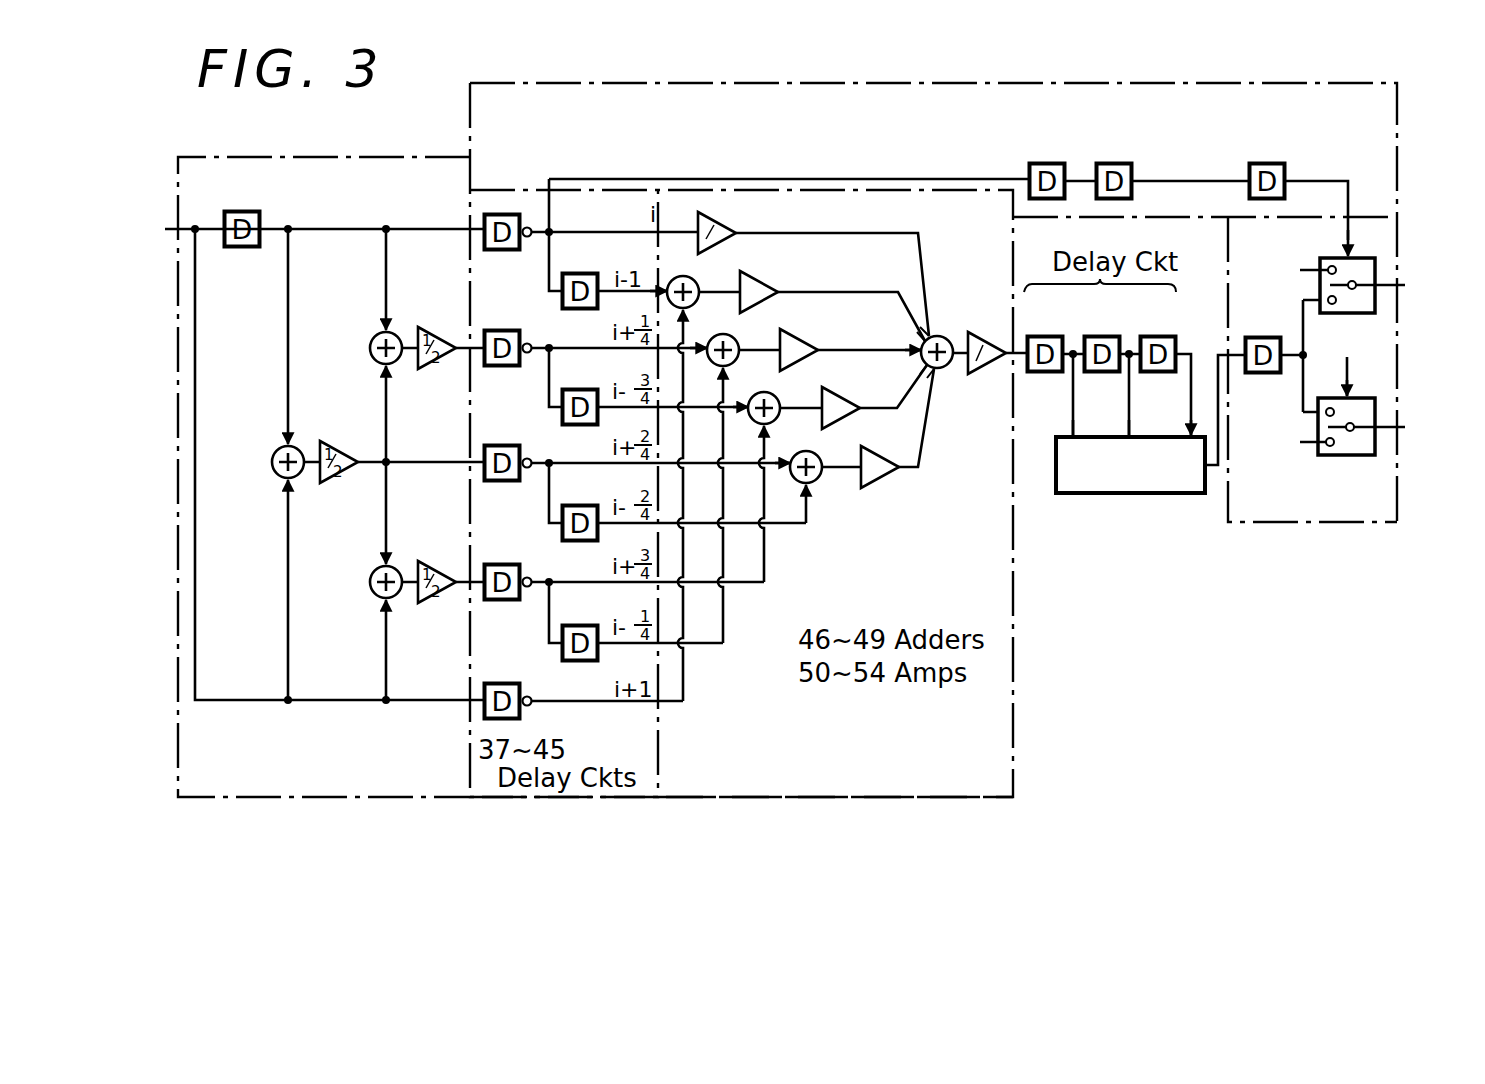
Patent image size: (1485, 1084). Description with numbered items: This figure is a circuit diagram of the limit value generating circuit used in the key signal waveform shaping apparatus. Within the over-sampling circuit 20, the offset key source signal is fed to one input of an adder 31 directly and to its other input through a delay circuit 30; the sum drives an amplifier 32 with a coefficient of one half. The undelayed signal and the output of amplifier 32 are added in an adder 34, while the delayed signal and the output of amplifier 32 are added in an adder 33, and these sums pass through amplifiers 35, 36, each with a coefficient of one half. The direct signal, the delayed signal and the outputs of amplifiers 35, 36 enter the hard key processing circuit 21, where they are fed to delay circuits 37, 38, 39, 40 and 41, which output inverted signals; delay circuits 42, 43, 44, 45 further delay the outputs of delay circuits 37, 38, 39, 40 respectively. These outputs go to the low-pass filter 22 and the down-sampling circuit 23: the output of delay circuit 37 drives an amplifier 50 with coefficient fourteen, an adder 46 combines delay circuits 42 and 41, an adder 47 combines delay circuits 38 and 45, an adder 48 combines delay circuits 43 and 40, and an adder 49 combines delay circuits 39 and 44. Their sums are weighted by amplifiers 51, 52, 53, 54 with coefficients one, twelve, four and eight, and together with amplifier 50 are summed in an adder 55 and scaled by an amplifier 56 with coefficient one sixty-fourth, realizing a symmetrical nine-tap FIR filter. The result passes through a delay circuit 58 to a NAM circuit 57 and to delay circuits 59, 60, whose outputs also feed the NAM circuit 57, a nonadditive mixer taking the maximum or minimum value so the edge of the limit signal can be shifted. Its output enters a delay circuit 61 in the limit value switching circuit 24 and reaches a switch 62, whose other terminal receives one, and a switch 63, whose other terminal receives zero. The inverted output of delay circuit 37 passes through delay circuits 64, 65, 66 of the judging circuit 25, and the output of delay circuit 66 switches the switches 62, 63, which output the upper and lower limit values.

The over-sampling circuit 20 is at (265, 798).
The hard key processing circuit 21 is at (564, 458).
The low-pass filter 22 is at (1014, 666).
The down-sampling circuit 23 is at (1007, 743).
The limit value switching circuit 24 is at (1248, 524).
The judging circuit 25 is at (1118, 83).
The delay circuit 30 is at (240, 211).
The adder 31 is at (270, 462).
The amplifier 32 is at (337, 483).
The adder 33 is at (368, 350).
The adder 34 is at (370, 592).
The amplifier 35 is at (434, 329).
The amplifier 36 is at (436, 568).
The delay circuit 37 is at (504, 250).
The delay circuit 38 is at (504, 366).
The delay circuit 39 is at (504, 481).
The delay circuit 40 is at (504, 600).
The delay circuit 41 is at (497, 669).
The delay circuit 42 is at (574, 309).
The delay circuit 43 is at (574, 425).
The delay circuit 44 is at (574, 541).
The delay circuit 45 is at (574, 661).
The adder 46 is at (684, 273).
The adder 47 is at (724, 331).
The adder 48 is at (765, 389).
The adder 49 is at (802, 448).
The amplifier 50 is at (717, 225).
The amplifier 51 is at (756, 281).
The amplifier 52 is at (792, 339).
The amplifier 53 is at (831, 397).
The amplifier 54 is at (869, 456).
The adder 55 is at (946, 366).
The amplifier 56 is at (972, 332).
The NAM circuit 57 is at (1090, 494).
The delay circuit 58 is at (1042, 336).
The delay circuit 59 is at (1100, 336).
The delay circuit 60 is at (1157, 336).
The delay circuit 61 is at (1256, 336).
The switch 62 is at (1380, 270).
The switch 63 is at (1345, 457).
The delay circuit 64 is at (1043, 163).
The delay circuit 65 is at (1104, 163).
The delay circuit 66 is at (1268, 164).